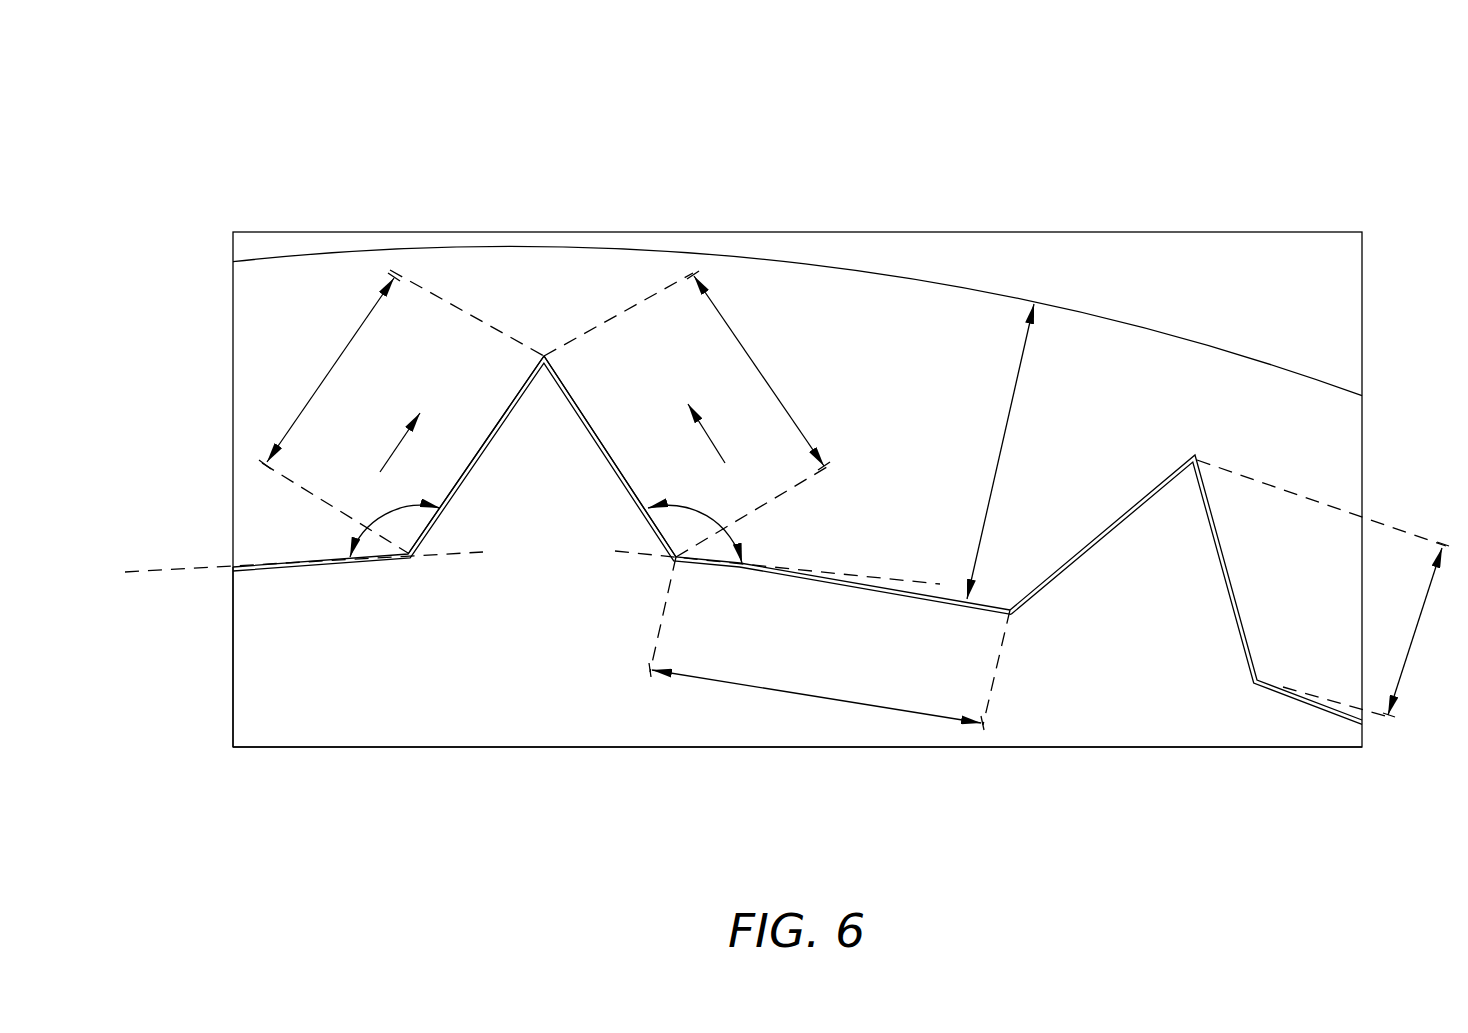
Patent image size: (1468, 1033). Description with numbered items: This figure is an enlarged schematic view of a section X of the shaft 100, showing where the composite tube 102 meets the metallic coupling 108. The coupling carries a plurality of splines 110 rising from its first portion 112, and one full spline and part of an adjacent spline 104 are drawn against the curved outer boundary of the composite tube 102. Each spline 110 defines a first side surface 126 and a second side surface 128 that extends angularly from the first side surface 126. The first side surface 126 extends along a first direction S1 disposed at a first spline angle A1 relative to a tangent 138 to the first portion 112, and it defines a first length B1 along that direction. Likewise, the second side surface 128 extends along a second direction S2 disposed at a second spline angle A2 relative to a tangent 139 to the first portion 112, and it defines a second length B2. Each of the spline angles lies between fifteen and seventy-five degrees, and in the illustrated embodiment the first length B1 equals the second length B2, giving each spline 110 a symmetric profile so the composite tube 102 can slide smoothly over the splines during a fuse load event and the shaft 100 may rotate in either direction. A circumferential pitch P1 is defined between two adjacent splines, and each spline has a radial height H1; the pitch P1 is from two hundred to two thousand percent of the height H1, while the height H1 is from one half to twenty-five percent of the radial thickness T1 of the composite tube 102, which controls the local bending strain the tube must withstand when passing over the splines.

The shaft 100 is at (1282, 81).
The composite tube 102 is at (968, 274).
The second tooth 104 is at (1135, 511).
The metallic coupling 108 is at (286, 664).
The spline 110 is at (540, 407).
The first portion 112 is at (490, 705).
The first side surface 126 is at (473, 453).
The second side surface 128 is at (585, 420).
The tangent 138 is at (160, 573).
The tangent 139 is at (917, 577).
The section X is at (254, 205).
The first length B1 is at (333, 368).
The first direction S1 is at (394, 450).
The first spline angle A1 is at (385, 515).
The second length B2 is at (757, 368).
The second direction S2 is at (712, 435).
The second spline angle A2 is at (679, 505).
The radial thickness T1 is at (1007, 432).
The circumferential pitch P1 is at (815, 697).
The radial height H1 is at (1323, 589).